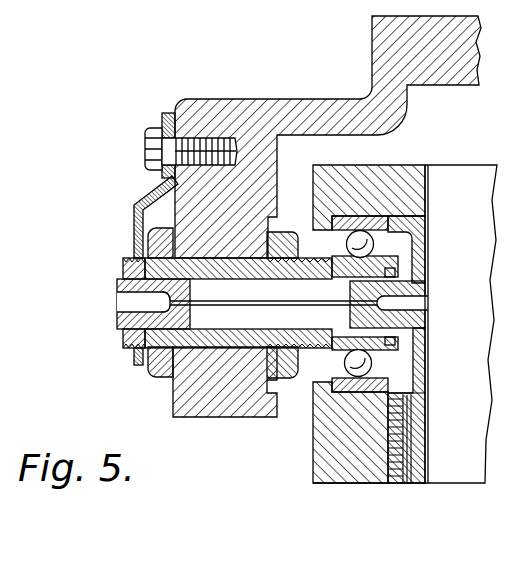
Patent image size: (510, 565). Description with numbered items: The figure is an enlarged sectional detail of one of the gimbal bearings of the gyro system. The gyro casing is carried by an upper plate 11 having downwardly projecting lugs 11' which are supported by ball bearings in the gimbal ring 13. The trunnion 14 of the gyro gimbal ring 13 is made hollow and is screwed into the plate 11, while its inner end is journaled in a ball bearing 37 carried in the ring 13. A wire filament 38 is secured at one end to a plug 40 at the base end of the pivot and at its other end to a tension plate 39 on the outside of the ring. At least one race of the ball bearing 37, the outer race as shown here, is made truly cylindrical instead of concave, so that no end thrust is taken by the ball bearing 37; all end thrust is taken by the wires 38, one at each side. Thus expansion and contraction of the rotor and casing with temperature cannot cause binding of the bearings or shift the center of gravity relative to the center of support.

The upper plate 11 is at (313, 137).
The downwardly projecting lugs 11' is at (187, 383).
The gimbal ring 13 is at (405, 173).
The trunnion 14 is at (207, 258).
The ball bearing 37 is at (375, 242).
The wire filament 38 is at (257, 300).
The tension plate 39 is at (428, 294).
The plug 40 is at (117, 292).